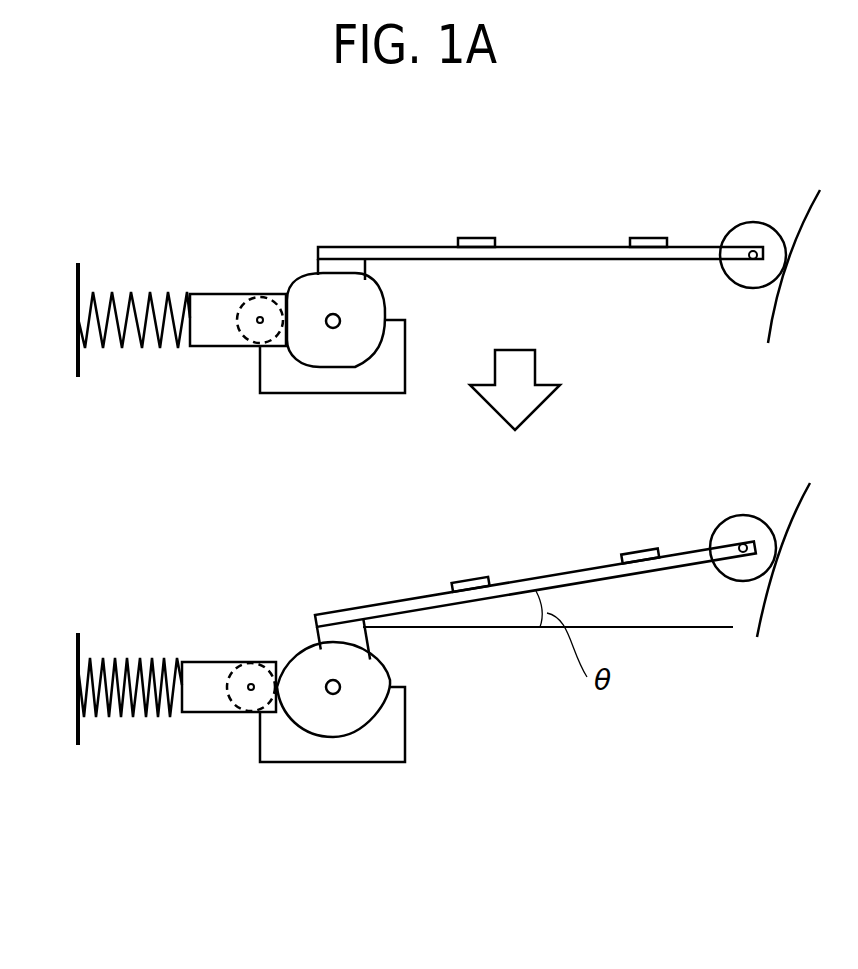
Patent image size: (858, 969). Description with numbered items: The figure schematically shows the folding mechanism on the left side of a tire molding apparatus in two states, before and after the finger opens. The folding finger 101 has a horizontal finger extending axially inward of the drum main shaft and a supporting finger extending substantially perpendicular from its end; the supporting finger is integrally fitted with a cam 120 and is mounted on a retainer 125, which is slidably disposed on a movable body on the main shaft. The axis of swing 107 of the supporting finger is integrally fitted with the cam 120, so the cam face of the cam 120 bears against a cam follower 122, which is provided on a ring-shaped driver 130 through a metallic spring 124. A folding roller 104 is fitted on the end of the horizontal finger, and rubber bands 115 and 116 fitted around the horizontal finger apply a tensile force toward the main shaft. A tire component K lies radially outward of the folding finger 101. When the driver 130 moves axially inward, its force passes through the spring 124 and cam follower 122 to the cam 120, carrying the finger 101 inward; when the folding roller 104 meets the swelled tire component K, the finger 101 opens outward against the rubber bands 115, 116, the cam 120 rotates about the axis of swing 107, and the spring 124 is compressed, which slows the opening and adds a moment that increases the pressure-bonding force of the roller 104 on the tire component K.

The folding finger 101 is at (566, 209).
The folding roller 104 is at (757, 224).
The axis of swing 107 is at (331, 328).
The rubber band 115 is at (652, 238).
The rubber band 116 is at (473, 238).
The cam 120 is at (385, 310).
The cam follower 122 is at (232, 297).
The metallic spring 124 is at (150, 292).
The retainer 125 is at (378, 393).
The ring-shaped driver 130 is at (75, 305).
The tire component K is at (820, 190).